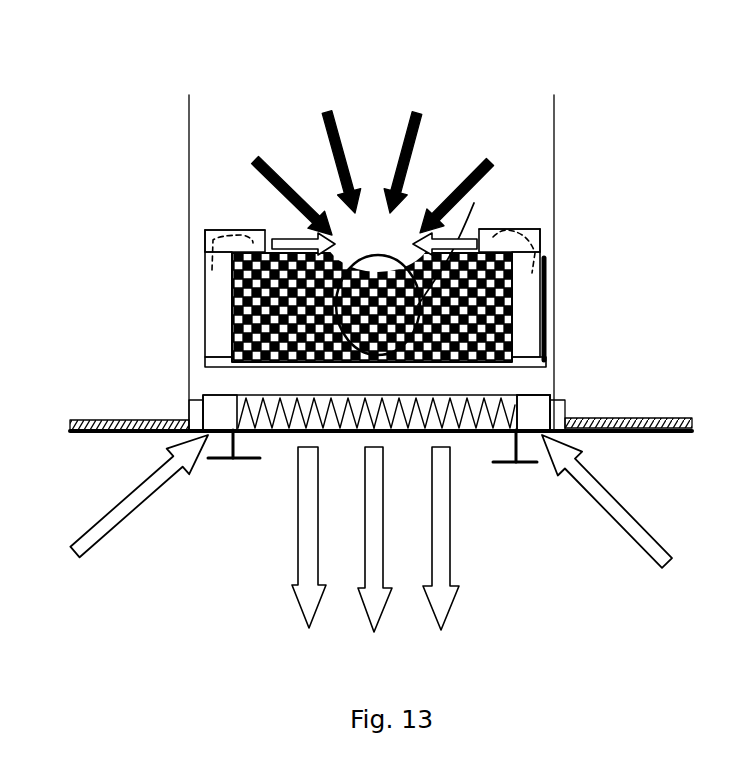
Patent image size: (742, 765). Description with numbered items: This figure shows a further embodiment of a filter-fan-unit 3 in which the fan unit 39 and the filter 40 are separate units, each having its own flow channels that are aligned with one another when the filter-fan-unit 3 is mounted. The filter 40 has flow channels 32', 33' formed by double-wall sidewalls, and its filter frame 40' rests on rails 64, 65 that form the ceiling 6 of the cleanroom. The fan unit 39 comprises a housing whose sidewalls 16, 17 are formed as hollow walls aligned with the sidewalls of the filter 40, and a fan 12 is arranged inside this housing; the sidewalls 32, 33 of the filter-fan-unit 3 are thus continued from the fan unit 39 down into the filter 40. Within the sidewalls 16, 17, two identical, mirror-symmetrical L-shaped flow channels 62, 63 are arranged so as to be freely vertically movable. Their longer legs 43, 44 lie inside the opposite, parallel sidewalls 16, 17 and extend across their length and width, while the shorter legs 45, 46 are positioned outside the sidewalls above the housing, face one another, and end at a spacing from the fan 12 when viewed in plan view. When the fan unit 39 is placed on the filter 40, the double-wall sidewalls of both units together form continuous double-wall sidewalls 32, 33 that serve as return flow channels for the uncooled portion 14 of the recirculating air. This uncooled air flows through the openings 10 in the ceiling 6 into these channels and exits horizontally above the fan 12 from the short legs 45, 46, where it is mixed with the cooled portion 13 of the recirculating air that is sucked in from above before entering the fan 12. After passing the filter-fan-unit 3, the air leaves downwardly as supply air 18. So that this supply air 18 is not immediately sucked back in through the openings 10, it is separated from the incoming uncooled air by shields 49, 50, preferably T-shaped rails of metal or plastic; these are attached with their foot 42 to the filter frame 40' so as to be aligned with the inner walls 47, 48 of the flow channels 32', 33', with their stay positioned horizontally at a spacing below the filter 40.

The filter-fan-unit 3 is at (609, 188).
The ceiling 6 is at (87, 437).
The openings 10 is at (218, 433).
The fan 12 is at (482, 143).
The cooled portion of the recirculating air 13 is at (400, 123).
The uncooled portion of the recirculating air 14 is at (296, 238).
The sidewall of the housing 16 is at (205, 315).
The sidewall of the housing 17 is at (549, 338).
The supply air 18 is at (375, 560).
The left side wall 32 is at (165, 270).
The flow channel of the filter 32' is at (147, 404).
The right side wall 33 is at (585, 226).
The flow channel of the filter 33' is at (604, 379).
The fan unit 39 is at (556, 309).
The filter 40 is at (597, 398).
The filter frame 40' is at (558, 383).
The foot 42 is at (253, 460).
The longer leg of the flow channel 43 is at (204, 337).
The longer leg of the flow channel 44 is at (541, 276).
The shorter leg of the flow channel 45 is at (242, 224).
The shorter leg of the flow channel 46 is at (503, 228).
The inner wall of the flow channel 47 is at (237, 400).
The inner wall of the flow channel 48 is at (520, 403).
The shield 49 is at (242, 466).
The shield 50 is at (517, 472).
The flow channel 62 is at (219, 220).
The flow channel 63 is at (529, 208).
The rail 64 is at (188, 424).
The rail 65 is at (610, 430).